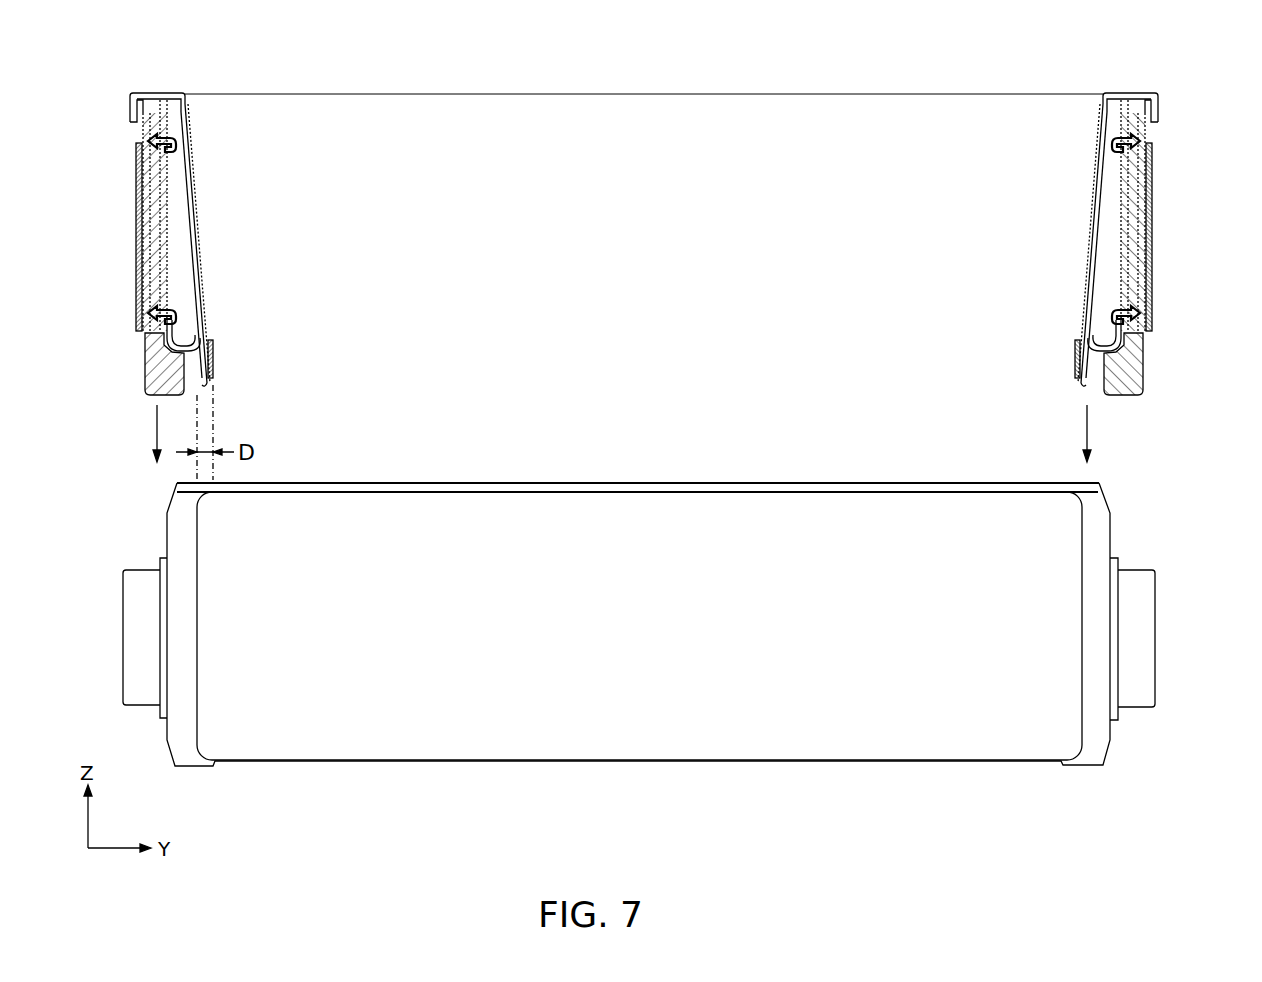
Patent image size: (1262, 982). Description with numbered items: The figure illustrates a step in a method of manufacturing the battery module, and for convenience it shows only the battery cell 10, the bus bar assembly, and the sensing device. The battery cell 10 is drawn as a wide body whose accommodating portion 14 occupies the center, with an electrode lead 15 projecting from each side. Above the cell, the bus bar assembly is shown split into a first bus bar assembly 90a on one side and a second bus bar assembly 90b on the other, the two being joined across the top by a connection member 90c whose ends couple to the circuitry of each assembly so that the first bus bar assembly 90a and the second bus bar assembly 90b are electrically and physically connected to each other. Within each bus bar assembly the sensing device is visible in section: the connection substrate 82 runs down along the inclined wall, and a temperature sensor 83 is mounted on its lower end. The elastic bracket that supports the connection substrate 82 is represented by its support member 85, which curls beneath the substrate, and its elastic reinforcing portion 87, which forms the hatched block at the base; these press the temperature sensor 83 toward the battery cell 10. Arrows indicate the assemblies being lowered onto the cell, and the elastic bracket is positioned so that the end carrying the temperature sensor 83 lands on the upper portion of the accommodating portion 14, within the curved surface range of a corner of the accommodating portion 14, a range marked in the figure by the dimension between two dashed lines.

The battery cell 10 is at (610, 669).
The accommodating portion 14 is at (505, 750).
The electrode lead 15 is at (140, 633).
The connection substrate 82 is at (205, 258).
The temperature sensor 83 is at (214, 357).
The support member 85 is at (208, 318).
The elastic reinforcing portion 87 is at (180, 356).
The first bus bar assembly 90a is at (161, 244).
The second bus bar assembly 90b is at (1158, 213).
The connection member 90c is at (650, 93).